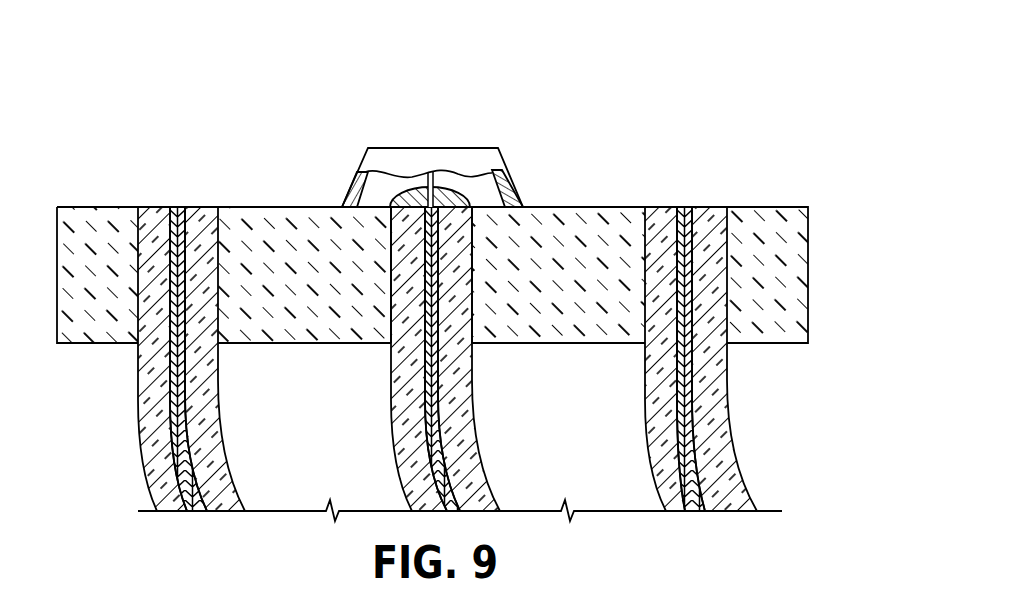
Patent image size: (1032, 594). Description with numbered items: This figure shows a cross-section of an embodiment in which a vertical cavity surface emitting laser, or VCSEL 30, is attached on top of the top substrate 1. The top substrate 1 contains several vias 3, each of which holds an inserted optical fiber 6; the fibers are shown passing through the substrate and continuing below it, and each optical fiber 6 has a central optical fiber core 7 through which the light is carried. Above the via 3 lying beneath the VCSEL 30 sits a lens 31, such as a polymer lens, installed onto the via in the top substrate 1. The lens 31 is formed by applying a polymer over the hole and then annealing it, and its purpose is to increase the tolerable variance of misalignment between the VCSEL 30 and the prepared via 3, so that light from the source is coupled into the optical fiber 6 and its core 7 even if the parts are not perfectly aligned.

The top substrate 1 is at (808, 268).
The via 3 is at (402, 300).
The optical fiber 6 is at (410, 373).
The optical fiber core 7 is at (435, 381).
The vertical cavity surface emitting laser 30 is at (510, 180).
The lens 31 is at (432, 192).